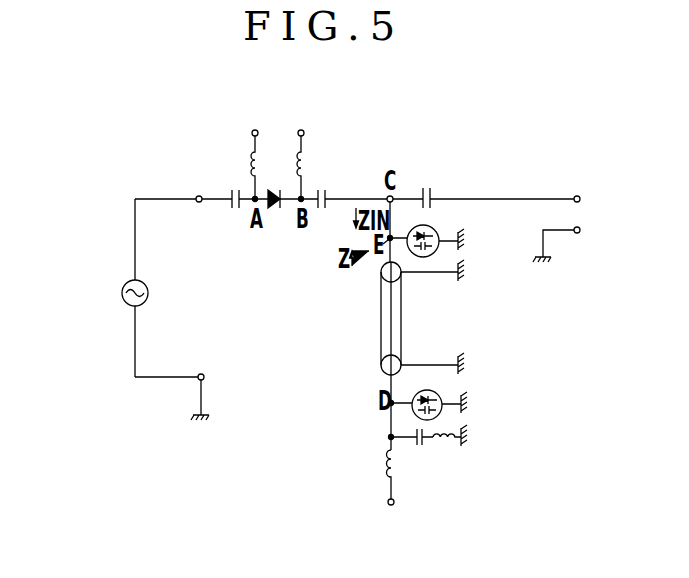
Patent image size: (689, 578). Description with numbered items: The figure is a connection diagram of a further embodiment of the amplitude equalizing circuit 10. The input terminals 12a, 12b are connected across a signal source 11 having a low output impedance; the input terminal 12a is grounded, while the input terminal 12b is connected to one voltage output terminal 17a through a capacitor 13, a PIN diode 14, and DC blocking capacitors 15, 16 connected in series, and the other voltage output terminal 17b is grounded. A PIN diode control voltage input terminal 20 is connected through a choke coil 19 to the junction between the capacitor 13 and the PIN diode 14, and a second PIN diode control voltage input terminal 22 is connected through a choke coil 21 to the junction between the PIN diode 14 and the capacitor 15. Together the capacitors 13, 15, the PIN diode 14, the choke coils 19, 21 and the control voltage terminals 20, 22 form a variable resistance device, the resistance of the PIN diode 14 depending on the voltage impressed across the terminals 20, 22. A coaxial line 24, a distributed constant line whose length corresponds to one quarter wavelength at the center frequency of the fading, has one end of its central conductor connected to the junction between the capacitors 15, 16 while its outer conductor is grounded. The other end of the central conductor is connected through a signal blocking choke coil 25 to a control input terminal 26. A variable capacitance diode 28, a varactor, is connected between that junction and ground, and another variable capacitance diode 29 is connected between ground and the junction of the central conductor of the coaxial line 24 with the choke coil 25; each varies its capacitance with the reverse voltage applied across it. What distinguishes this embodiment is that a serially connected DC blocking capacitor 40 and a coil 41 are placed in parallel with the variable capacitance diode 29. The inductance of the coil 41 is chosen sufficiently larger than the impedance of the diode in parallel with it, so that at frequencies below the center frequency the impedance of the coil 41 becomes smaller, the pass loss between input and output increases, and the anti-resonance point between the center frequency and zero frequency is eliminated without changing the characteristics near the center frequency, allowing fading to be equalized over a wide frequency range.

The amplitude equalizing circuit 10 is at (98, 237).
The signal source 11 is at (127, 288).
The input terminal 12a is at (187, 389).
The input terminal 12b is at (207, 182).
The capacitor 13 is at (235, 212).
The PIN diode 14 is at (277, 209).
The DC blocking capacitor 15 is at (322, 212).
The DC blocking capacitor 16 is at (429, 184).
The voltage output terminal 17a is at (596, 197).
The voltage output terminal 17b is at (575, 238).
The choke coil 19 is at (268, 167).
The PIN diode control voltage input terminal 20 is at (256, 118).
The choke coil 21 is at (313, 167).
The PIN diode control voltage input terminal 22 is at (301, 118).
The coaxial line 24 is at (402, 315).
The signal blocking choke coil 25 is at (379, 474).
The control input terminal 26 is at (396, 522).
The variable capacitance diode 28 is at (437, 213).
The variable capacitance diode 29 is at (424, 391).
The DC blocking capacitor 40 is at (413, 454).
The coil 41 is at (450, 450).